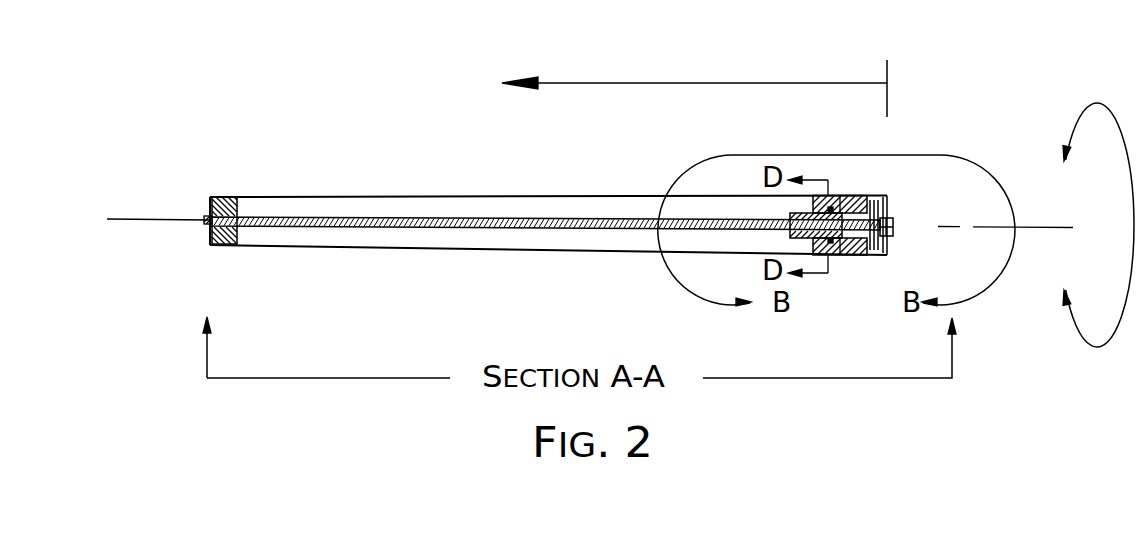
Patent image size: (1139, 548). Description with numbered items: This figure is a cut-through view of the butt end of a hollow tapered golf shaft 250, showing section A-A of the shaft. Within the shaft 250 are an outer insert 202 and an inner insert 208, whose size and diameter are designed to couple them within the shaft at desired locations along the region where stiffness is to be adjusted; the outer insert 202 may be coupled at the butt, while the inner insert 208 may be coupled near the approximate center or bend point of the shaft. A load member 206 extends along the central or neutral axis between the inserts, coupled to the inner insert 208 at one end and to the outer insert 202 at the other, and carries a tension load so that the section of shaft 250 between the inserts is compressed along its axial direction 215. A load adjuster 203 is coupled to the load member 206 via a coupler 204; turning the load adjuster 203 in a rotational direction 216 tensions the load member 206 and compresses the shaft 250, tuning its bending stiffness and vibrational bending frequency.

The outer insert 202 is at (853, 195).
The load adjuster 203 is at (895, 237).
The coupler 204 is at (836, 252).
The load member 206 is at (440, 227).
The inner insert 208 is at (240, 200).
The axial direction 215 is at (683, 84).
The rotational direction 216 is at (1071, 118).
The shaft 250 is at (462, 195).